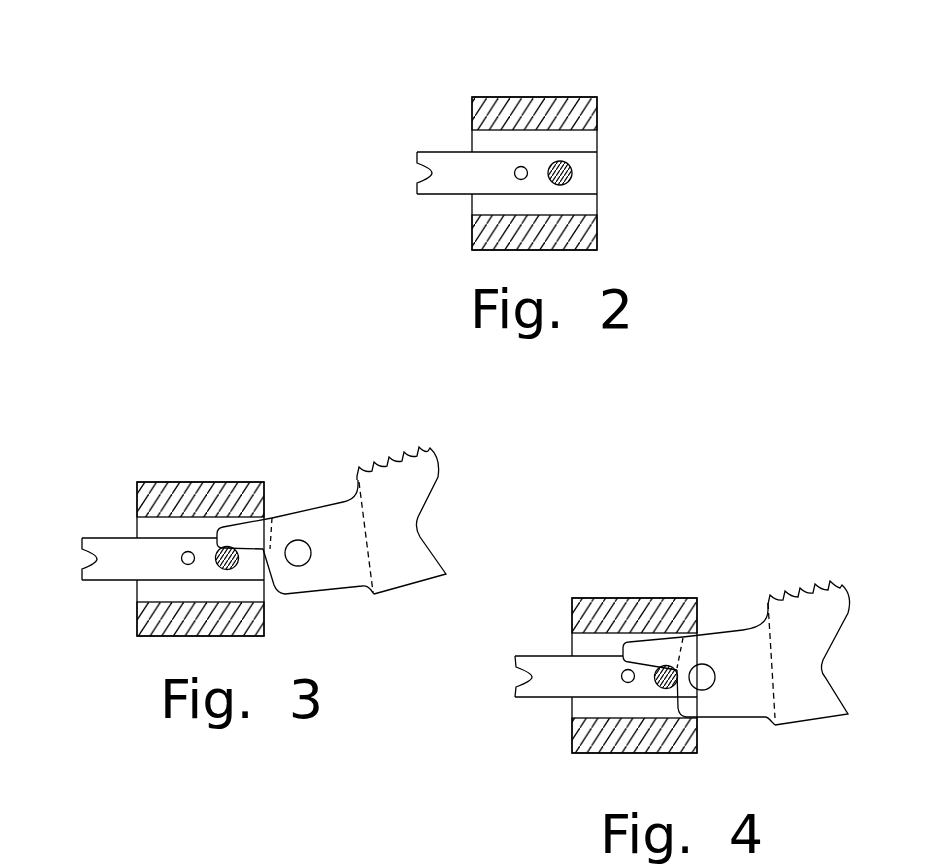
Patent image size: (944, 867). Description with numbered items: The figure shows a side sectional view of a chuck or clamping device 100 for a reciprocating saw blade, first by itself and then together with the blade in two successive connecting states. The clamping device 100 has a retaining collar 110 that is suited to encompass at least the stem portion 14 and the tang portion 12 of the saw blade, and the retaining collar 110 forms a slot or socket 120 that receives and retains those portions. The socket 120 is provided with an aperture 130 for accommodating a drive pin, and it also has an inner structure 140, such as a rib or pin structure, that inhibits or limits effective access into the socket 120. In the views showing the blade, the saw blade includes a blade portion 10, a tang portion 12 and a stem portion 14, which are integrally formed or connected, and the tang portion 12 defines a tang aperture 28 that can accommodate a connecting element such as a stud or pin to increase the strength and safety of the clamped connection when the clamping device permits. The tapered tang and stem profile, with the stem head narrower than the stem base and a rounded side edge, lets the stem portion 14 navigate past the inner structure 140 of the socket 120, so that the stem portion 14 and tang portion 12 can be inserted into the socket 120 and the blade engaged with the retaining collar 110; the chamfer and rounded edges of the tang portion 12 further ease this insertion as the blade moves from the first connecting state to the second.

In FIG. 2, the clamping device 100 is at (515, 134).
In FIG. 2, the retaining collar 110 is at (520, 89).
In FIG. 3, the retaining collar 110 is at (185, 473).
In FIG. 4, the retaining collar 110 is at (664, 589).
In FIG. 2, the socket 120 is at (575, 195).
In FIG. 3, the socket 120 is at (145, 582).
In FIG. 4, the socket 120 is at (577, 697).
In FIG. 2, the aperture 130 is at (565, 160).
In FIG. 3, the aperture 130 is at (227, 542).
In FIG. 4, the aperture 130 is at (666, 660).
In FIG. 2, the inner structure 140 is at (507, 162).
In FIG. 3, the inner structure 140 is at (175, 549).
In FIG. 4, the inner structure 140 is at (614, 667).
In FIG. 3, the blade portion 10 is at (352, 551).
In FIG. 4, the blade portion 10 is at (740, 675).
In FIG. 3, the tang portion 12 is at (324, 550).
In FIG. 4, the tang portion 12 is at (734, 680).
In FIG. 3, the stem portion 14 is at (224, 527).
In FIG. 4, the stem portion 14 is at (626, 645).
In FIG. 3, the tang aperture 28 is at (290, 558).
In FIG. 4, the tang aperture 28 is at (696, 671).